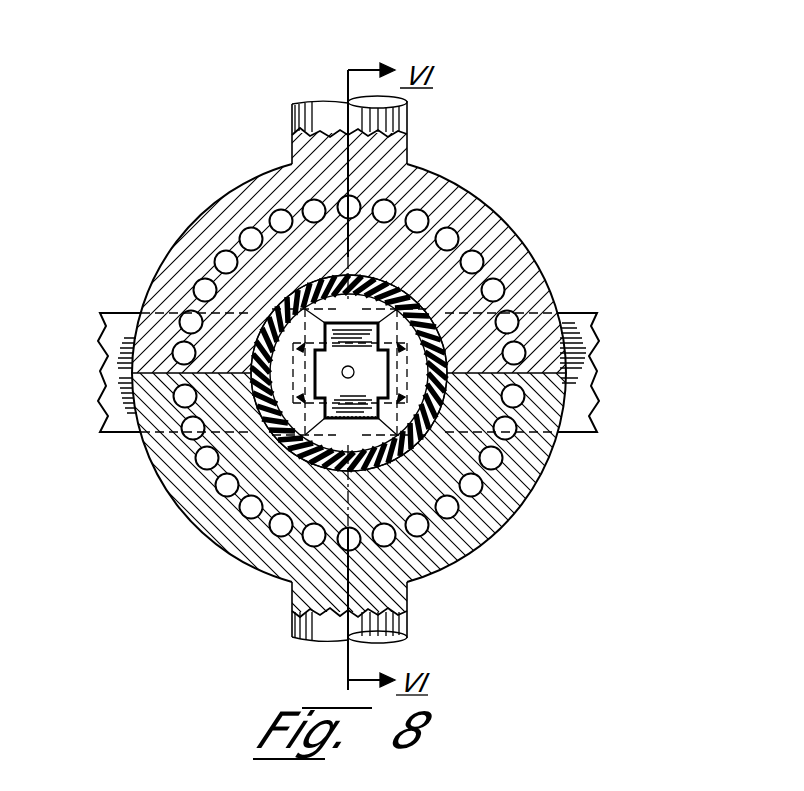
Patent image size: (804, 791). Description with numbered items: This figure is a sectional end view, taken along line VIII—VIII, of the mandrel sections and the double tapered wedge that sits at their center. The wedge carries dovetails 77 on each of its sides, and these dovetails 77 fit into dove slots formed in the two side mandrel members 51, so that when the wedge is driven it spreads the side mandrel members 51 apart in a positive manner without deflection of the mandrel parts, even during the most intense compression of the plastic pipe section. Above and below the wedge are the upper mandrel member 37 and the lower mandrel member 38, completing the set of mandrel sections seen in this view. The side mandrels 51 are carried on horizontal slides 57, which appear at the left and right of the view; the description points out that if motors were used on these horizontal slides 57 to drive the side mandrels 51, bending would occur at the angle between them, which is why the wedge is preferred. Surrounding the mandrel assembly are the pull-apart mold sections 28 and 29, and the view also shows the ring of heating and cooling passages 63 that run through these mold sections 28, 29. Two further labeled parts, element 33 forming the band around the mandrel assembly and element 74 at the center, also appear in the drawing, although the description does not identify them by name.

The pull-apart mold section 28 is at (204, 538).
The pull-apart mold section 29 is at (206, 217).
The bearing ring 33 is at (309, 287).
The upper mandrel member 37 is at (349, 311).
The lower mandrel member 38 is at (349, 432).
The side mandrel member 51 is at (342, 372).
The horizontal slide 57 is at (121, 312).
The heating and cooling passage 63 is at (500, 473).
The cross member 74 is at (351, 370).
The dovetail 77 is at (350, 377).